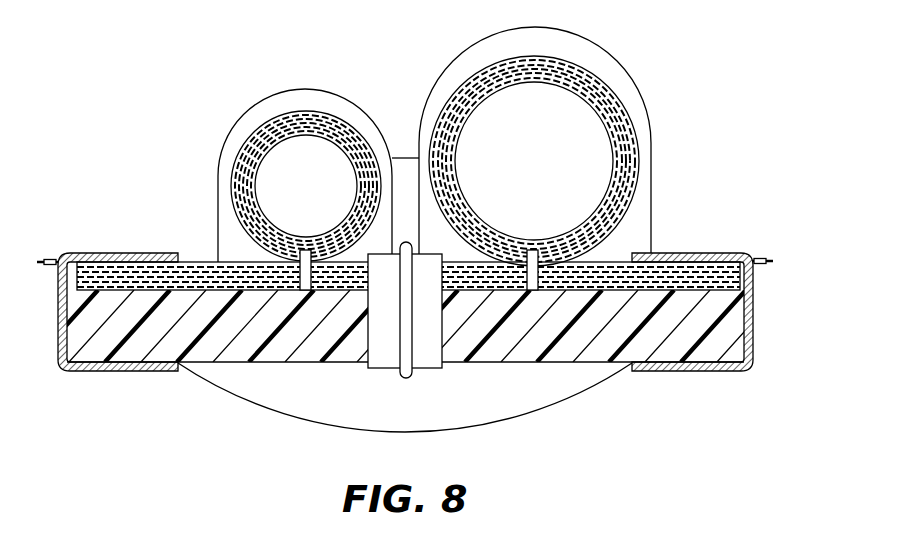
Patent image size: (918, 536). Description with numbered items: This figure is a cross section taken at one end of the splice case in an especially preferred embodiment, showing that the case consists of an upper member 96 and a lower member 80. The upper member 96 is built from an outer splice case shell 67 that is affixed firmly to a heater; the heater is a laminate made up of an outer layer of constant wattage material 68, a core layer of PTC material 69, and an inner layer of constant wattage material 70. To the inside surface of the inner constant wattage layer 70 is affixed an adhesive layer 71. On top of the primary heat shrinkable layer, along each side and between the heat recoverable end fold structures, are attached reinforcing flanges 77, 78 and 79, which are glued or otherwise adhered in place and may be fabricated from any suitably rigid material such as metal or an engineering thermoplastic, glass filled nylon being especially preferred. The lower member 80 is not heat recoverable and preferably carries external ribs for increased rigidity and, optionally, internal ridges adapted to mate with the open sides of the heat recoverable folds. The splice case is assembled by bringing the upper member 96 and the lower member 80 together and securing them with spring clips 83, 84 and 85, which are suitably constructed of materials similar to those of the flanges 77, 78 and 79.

The outer splice case shell 67 is at (543, 57).
The outer layer of constant wattage material 68 is at (557, 68).
The core layer of PTC material 69 is at (587, 83).
The inner layer of constant wattage material 70 is at (607, 97).
The adhesive layer 71 is at (617, 100).
The reinforcing flange 77 is at (686, 252).
The reinforcing flange 78 is at (467, 260).
The reinforcing flange 79 is at (182, 258).
The lower member 80 is at (323, 412).
The spring clip 83 is at (757, 349).
The spring clip 84 is at (427, 358).
The spring clip 85 is at (98, 255).
The upper member 96 is at (445, 73).